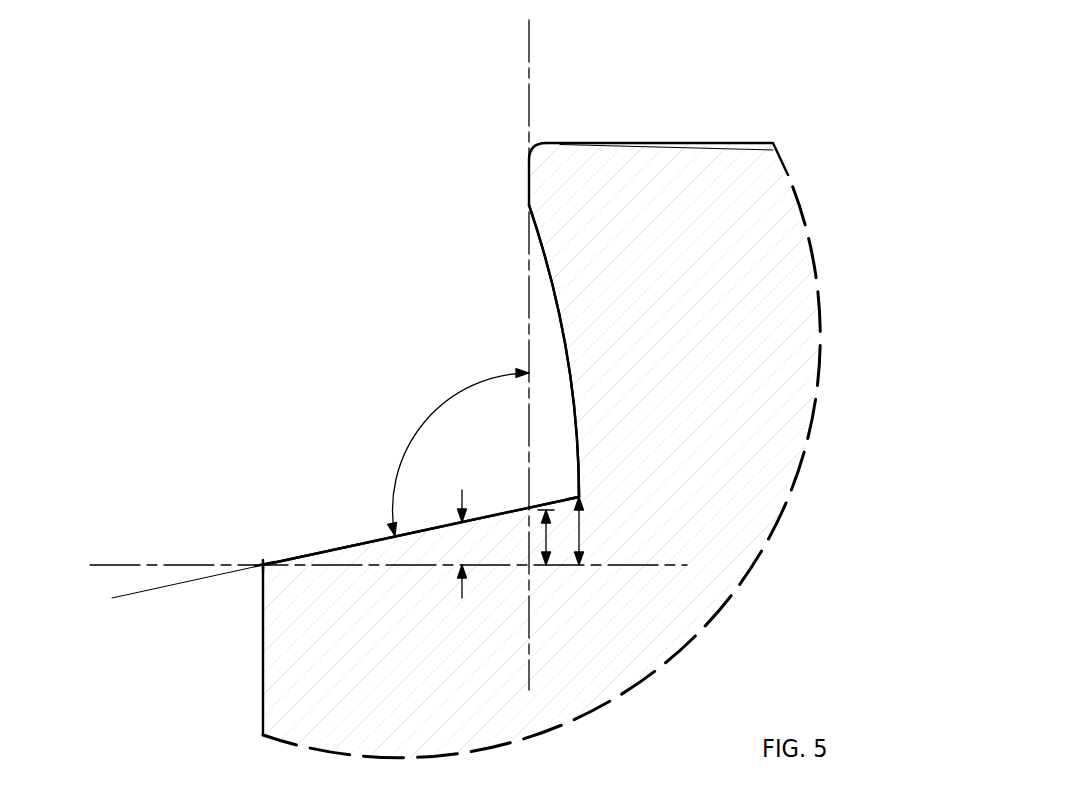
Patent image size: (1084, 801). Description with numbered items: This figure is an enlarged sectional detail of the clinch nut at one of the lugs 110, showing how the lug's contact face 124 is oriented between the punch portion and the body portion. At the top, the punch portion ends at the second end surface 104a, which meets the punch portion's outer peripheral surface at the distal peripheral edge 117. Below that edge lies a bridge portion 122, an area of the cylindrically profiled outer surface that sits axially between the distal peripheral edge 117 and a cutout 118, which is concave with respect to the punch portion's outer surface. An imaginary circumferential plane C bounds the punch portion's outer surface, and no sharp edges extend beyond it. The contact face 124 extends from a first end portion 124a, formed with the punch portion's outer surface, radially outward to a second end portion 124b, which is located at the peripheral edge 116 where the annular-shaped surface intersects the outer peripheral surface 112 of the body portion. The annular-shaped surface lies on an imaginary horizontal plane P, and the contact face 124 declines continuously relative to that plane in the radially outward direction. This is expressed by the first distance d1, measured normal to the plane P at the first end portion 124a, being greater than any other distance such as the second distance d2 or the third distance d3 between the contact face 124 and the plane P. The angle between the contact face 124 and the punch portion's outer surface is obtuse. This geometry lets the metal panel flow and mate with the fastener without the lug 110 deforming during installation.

The second end surface 104a is at (640, 143).
The lug 110 is at (298, 500).
The outer peripheral surface of the body portion 112 is at (263, 623).
The peripheral edge 116 is at (262, 563).
The distal peripheral edge 117 is at (530, 147).
The cutout 118 is at (552, 283).
The bridge portion 122 is at (528, 182).
The contact face 124 is at (363, 542).
The first end portion 124a is at (578, 497).
The second end portion 124b is at (263, 557).
The imaginary circumferential plane C is at (530, 42).
The imaginary horizontal plane P is at (640, 567).
The first distance d1 is at (581, 532).
The second distance d2 is at (545, 537).
The third distance d3 is at (461, 544).